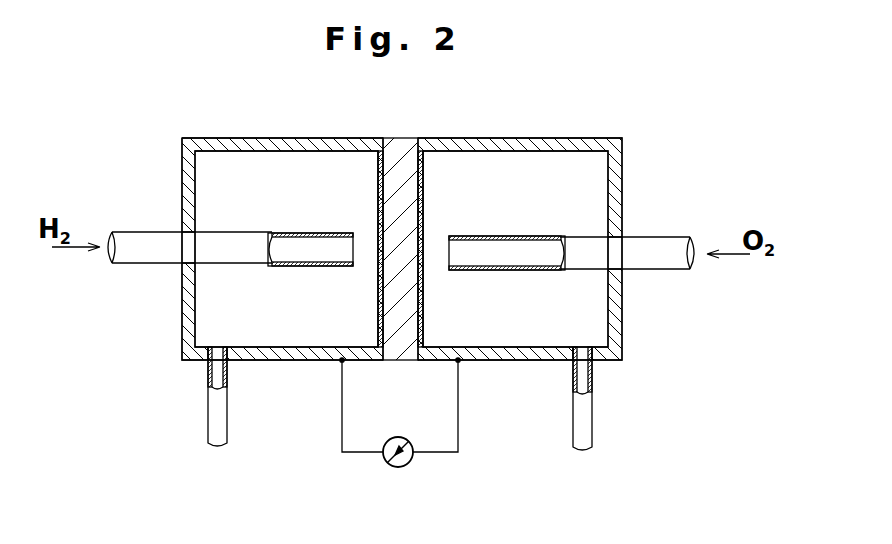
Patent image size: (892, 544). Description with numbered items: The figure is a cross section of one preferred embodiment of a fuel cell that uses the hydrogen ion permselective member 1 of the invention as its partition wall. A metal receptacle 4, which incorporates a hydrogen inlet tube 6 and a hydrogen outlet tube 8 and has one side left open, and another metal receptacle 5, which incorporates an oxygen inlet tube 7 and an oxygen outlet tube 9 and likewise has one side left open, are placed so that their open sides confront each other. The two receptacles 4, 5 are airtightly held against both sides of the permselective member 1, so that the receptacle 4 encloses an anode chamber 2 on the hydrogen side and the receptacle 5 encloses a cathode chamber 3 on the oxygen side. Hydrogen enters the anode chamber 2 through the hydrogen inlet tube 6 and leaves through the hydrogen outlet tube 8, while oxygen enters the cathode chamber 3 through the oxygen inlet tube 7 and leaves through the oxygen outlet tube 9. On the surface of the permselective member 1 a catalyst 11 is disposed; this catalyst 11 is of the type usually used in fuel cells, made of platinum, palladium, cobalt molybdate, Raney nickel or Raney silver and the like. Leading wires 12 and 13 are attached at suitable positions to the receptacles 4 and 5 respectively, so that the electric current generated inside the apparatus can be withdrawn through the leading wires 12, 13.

The hydrogen ion permselective member 1 is at (403, 152).
The anode chamber 2 is at (310, 313).
The cathode chamber 3 is at (526, 313).
The metal receptacle 4 is at (299, 140).
The metal receptacle 5 is at (514, 140).
The hydrogen inlet tube 6 is at (286, 245).
The oxygen inlet tube 7 is at (513, 245).
The hydrogen outlet tube 8 is at (220, 400).
The oxygen outlet tube 9 is at (582, 384).
The catalyst 11 is at (378, 186).
The leading wire 12 is at (342, 415).
The leading wire 13 is at (458, 415).